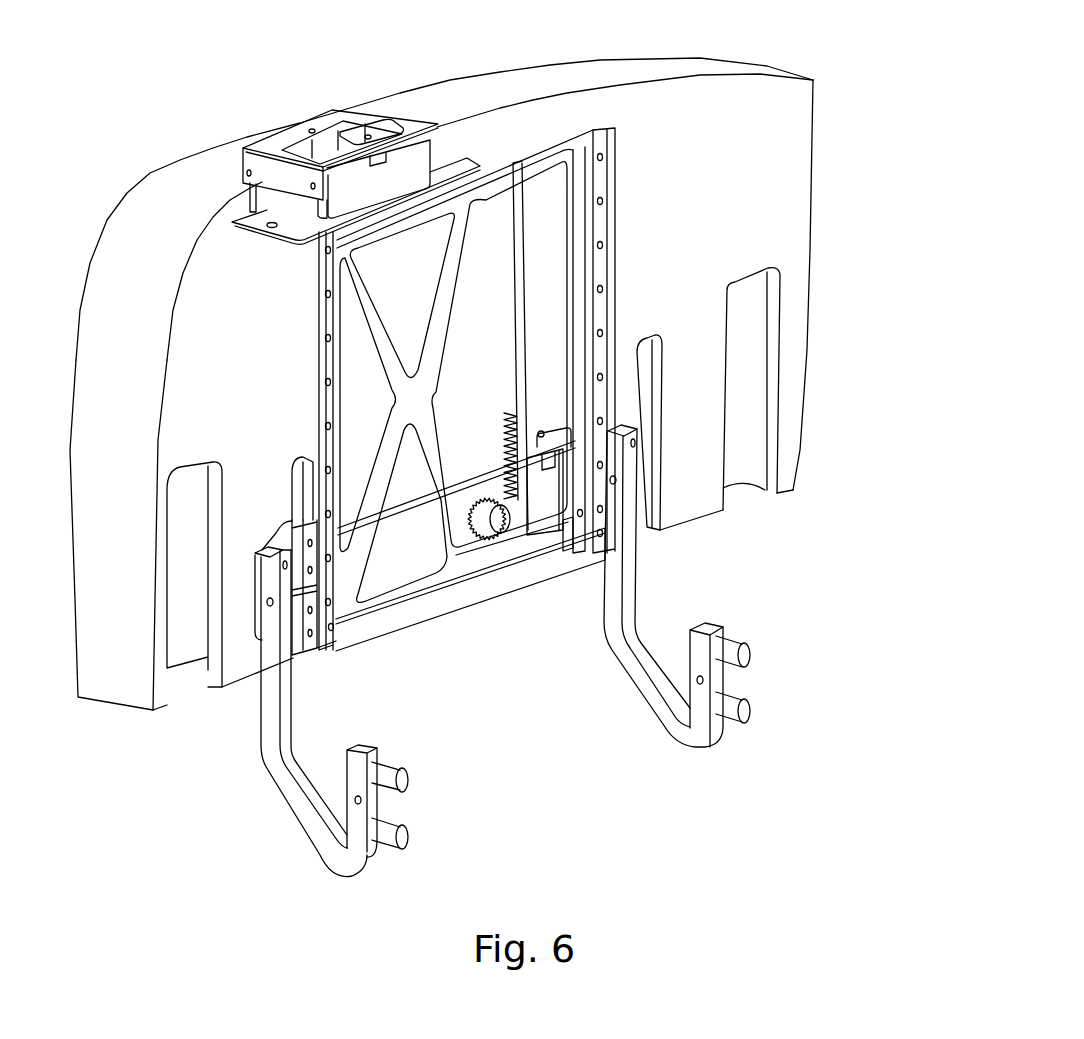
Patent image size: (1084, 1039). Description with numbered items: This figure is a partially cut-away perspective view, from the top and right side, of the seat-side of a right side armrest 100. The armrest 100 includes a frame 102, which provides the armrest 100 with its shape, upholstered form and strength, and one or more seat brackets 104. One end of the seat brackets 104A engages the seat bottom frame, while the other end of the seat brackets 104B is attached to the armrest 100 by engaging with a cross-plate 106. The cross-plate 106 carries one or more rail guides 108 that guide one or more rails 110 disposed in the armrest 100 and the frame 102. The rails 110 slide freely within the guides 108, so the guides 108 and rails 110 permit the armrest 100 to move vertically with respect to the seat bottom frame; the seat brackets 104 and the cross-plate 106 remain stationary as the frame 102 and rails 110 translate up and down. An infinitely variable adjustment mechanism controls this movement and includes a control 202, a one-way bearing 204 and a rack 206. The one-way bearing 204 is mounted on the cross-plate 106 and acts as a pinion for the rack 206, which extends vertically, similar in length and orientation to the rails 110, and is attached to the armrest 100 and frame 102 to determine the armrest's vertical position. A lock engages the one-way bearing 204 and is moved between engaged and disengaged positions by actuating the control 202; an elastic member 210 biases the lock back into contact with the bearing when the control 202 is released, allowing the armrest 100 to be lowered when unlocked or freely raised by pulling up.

The armrest 100 is at (235, 95).
The frame 102 is at (687, 103).
The seat brackets 104 is at (633, 692).
The one end of the seat brackets 104A is at (733, 632).
The other end of the seat brackets 104B is at (648, 543).
The cross-plate 106 is at (403, 533).
The rail guides 108 is at (583, 560).
The rails 110 is at (620, 237).
The control 202 is at (355, 135).
The one-way bearing 204 is at (493, 563).
The rack 206 is at (510, 337).
The spring 210 is at (505, 437).